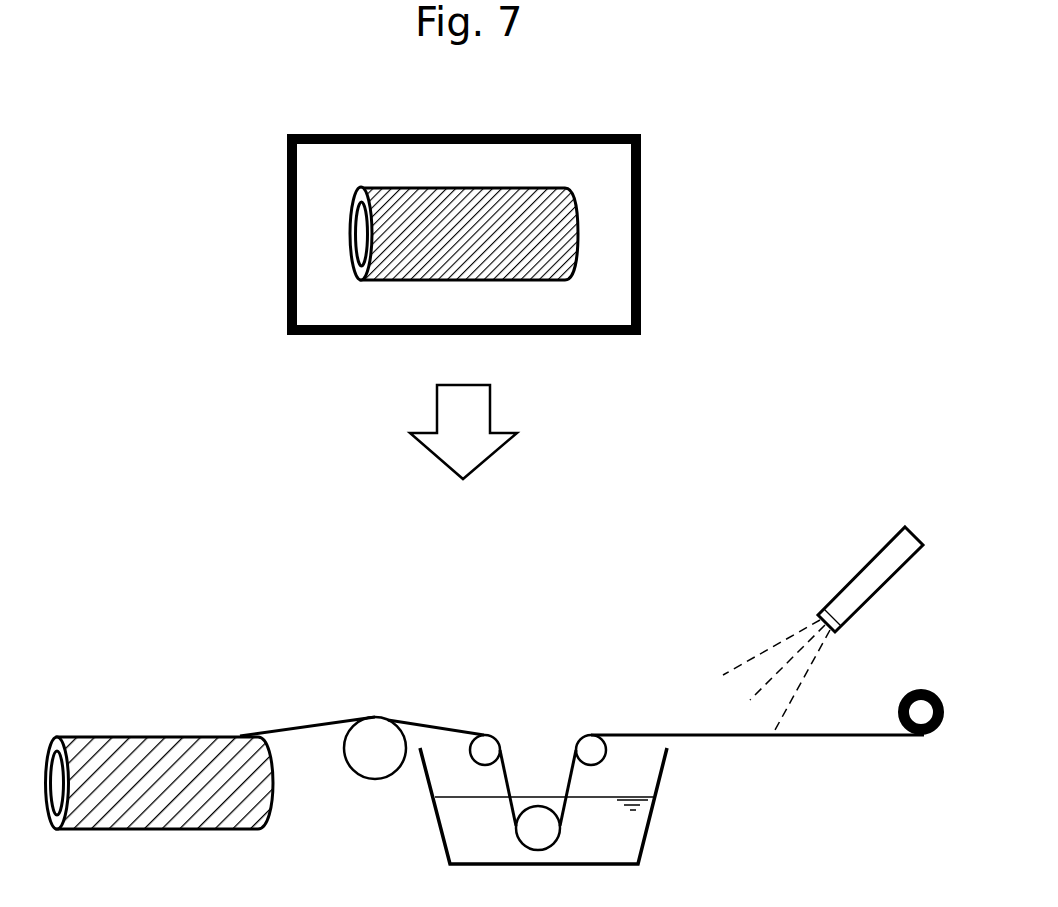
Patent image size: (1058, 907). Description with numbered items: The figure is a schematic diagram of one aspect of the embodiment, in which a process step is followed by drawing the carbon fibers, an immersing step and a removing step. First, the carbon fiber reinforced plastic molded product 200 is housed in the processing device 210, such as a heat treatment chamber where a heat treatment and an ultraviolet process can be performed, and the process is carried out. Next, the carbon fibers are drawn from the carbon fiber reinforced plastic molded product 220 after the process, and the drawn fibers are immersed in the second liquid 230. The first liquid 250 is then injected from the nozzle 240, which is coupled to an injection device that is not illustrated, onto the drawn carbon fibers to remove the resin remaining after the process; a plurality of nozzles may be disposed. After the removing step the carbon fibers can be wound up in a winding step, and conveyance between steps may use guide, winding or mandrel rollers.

The carbon fiber reinforced plastic molded product 200 is at (578, 232).
The processing device 210 is at (641, 287).
The carbon fiber reinforced plastic molded product after the process 220 is at (273, 780).
The second liquid 230 is at (637, 817).
The nozzle 240 is at (873, 582).
The first liquid 250 is at (813, 683).